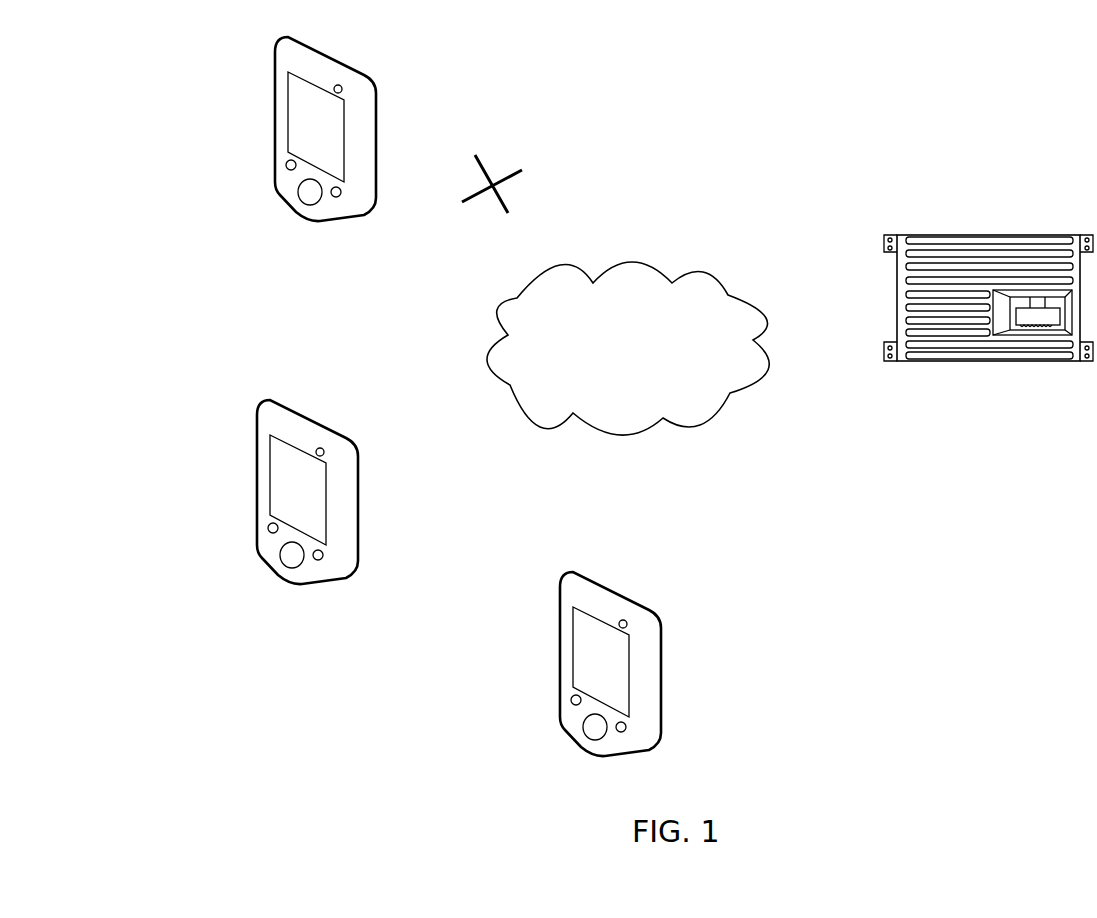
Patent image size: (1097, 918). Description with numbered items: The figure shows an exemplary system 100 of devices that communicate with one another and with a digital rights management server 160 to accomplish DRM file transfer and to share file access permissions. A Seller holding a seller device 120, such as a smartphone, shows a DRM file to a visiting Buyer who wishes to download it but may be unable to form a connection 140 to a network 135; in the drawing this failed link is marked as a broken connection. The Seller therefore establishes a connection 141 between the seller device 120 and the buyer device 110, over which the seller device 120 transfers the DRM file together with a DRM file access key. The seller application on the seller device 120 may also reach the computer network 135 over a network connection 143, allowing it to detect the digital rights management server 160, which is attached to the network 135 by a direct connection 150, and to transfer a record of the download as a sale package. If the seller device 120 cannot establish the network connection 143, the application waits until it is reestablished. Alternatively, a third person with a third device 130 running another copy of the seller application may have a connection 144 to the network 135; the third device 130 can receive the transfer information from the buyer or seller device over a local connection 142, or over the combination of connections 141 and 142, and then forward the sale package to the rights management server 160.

The system 100 is at (748, 112).
The buyer device 110 is at (412, 120).
The seller device 120 is at (214, 470).
The third device 130 is at (698, 699).
The network 135 is at (628, 348).
The connection 140 is at (385, 149).
The connection 141 is at (306, 227).
The local connection 142 is at (375, 571).
The network connection 143 is at (497, 398).
The connection 144 is at (626, 438).
The direct connection 150 is at (876, 307).
The digital rights management server 160 is at (864, 236).